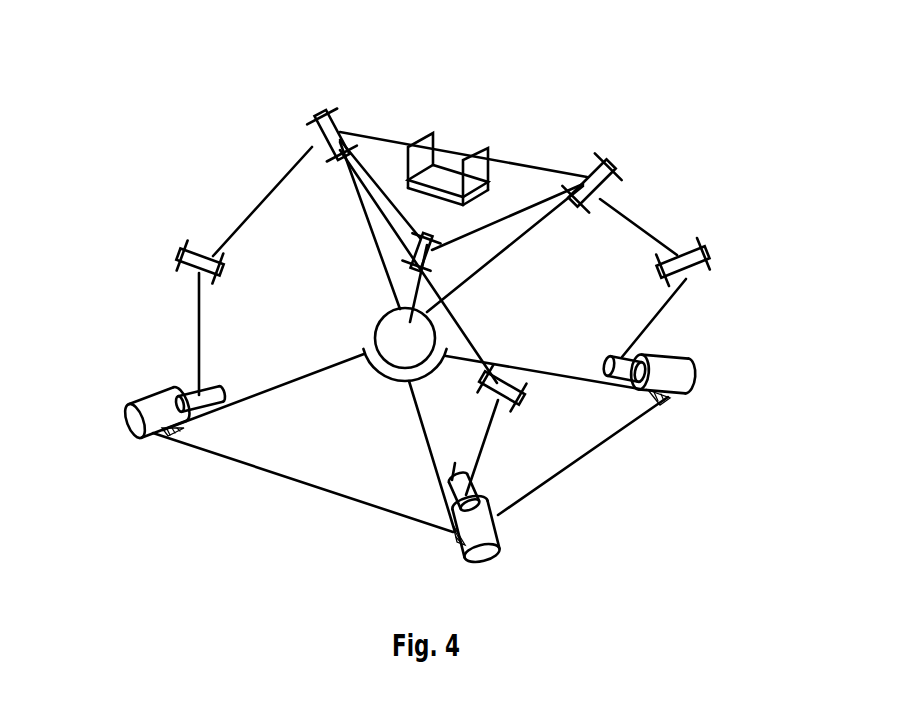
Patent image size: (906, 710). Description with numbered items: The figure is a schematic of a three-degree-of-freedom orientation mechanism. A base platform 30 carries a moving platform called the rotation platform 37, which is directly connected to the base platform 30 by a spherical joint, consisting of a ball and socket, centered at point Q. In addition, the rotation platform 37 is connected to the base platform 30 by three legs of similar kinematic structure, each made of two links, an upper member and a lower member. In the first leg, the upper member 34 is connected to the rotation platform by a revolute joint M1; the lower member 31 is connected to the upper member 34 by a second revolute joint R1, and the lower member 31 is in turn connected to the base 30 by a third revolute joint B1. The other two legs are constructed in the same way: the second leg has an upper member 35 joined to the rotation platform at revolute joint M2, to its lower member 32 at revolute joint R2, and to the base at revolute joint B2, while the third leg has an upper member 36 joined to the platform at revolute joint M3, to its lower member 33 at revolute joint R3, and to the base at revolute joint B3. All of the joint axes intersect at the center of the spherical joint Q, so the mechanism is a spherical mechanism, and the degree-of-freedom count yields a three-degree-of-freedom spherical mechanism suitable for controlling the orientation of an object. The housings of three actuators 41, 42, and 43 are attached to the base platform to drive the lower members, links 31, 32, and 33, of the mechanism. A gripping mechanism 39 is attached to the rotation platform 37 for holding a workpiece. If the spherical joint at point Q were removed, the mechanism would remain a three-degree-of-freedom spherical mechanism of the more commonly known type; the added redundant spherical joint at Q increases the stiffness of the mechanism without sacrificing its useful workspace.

The base platform 30 is at (284, 466).
The lower member 31 is at (196, 328).
The lower member 32 is at (488, 428).
The lower member 33 is at (660, 316).
The upper member 34 is at (276, 180).
The upper member 35 is at (478, 330).
The upper member 36 is at (642, 222).
The rotation platform 37 is at (370, 150).
The gripping mechanism 39 is at (440, 172).
The actuator 41 is at (163, 420).
The actuator 42 is at (455, 545).
The actuator 43 is at (678, 390).
The revolute joint M1 is at (327, 114).
The revolute joint M2 is at (427, 235).
The revolute joint M3 is at (609, 171).
The second revolute joint R1 is at (180, 254).
The revolute joint R2 is at (525, 395).
The revolute joint R3 is at (710, 252).
The third revolute joint B1 is at (136, 423).
The revolute joint B2 is at (484, 537).
The revolute joint B3 is at (690, 384).
The point Q is at (404, 344).